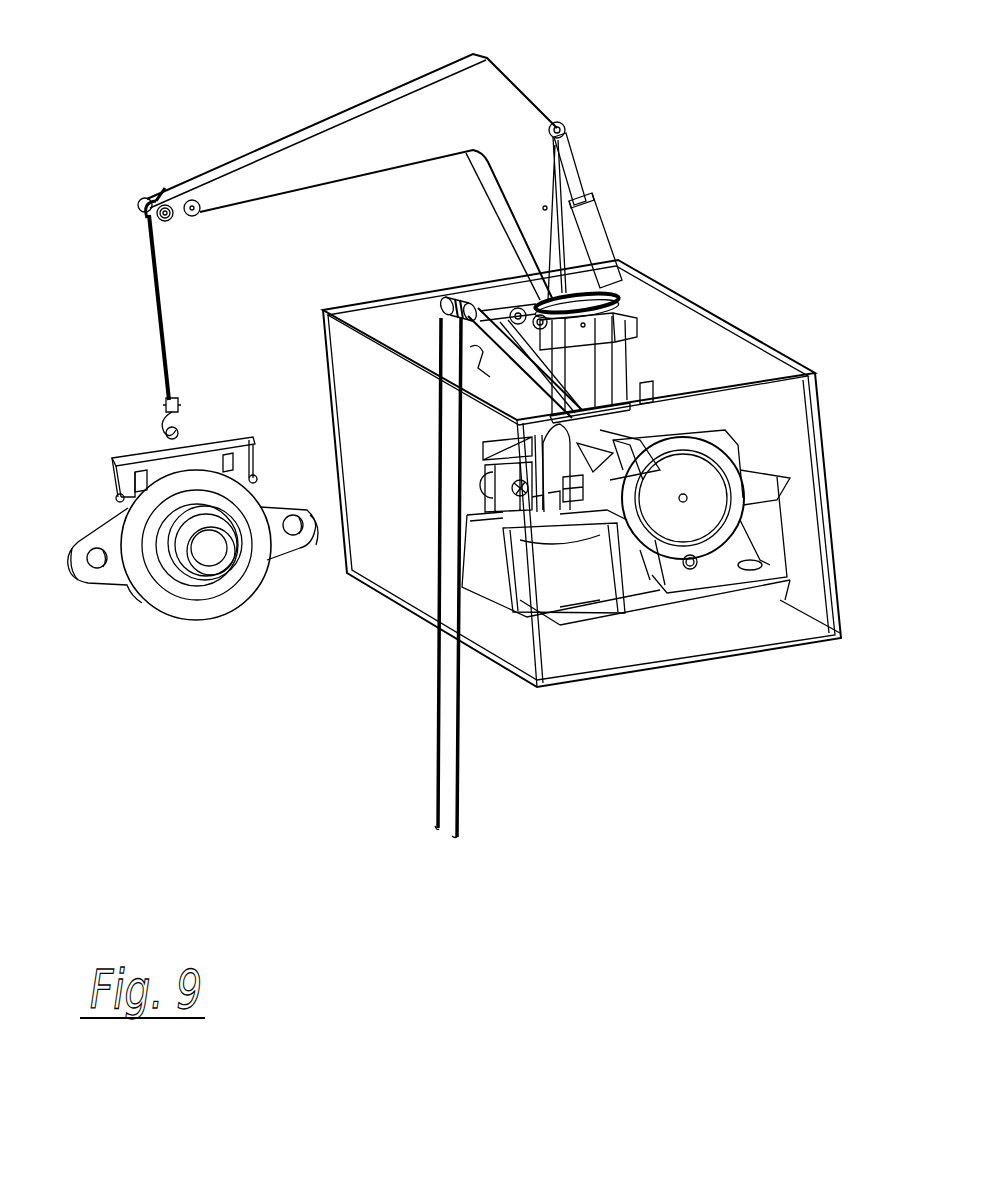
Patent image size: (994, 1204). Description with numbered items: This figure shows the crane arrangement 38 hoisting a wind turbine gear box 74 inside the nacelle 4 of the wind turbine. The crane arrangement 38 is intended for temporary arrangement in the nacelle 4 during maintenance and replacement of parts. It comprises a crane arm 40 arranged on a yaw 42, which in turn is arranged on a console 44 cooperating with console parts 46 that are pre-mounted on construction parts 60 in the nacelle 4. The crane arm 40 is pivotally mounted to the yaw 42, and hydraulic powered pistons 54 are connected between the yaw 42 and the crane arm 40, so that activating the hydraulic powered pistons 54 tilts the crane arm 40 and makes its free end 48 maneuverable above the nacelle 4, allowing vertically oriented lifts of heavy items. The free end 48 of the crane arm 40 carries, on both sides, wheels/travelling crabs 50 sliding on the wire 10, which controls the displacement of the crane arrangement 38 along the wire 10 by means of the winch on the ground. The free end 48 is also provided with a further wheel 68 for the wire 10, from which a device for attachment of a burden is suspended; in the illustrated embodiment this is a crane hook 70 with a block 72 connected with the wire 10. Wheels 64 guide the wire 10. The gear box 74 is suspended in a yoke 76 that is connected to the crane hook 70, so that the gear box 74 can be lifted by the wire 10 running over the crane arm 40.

The nacelle 4 is at (680, 616).
The wire 10 is at (168, 324).
The crane arrangement 38 is at (675, 261).
The crane arm 40 is at (356, 177).
The yaw 42 is at (640, 316).
The console 44 is at (612, 368).
The console parts 46 is at (670, 418).
The free end of the crane arm 48 is at (116, 177).
The wheels/travelling crabs 50 is at (172, 222).
The hydraulic powered pistons 54 is at (598, 234).
The construction parts 60 is at (561, 563).
The wheels 64 is at (446, 312).
The further wheel 68 is at (165, 190).
The crane hook 70 is at (162, 432).
The block 72 is at (178, 414).
The wind turbine gear box 74 is at (178, 610).
The yoke 76 is at (203, 446).